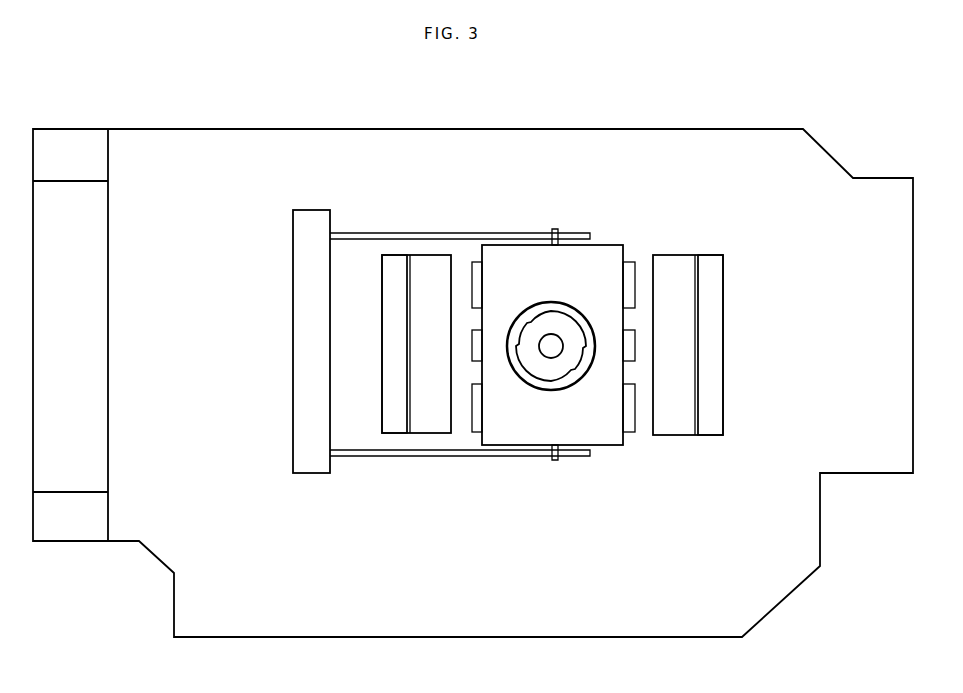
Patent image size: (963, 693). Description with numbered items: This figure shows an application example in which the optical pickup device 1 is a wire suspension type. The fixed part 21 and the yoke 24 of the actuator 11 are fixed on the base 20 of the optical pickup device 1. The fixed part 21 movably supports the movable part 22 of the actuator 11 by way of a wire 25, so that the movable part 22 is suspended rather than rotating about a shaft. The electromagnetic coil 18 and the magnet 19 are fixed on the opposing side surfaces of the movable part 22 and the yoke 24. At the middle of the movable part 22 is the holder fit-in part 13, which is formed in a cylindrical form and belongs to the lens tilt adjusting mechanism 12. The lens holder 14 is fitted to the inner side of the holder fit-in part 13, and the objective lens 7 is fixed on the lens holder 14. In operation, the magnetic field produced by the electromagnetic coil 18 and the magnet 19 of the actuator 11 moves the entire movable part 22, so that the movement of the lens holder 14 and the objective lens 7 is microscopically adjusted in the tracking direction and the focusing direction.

The optical pickup device 1 is at (764, 90).
The objective lens 7 is at (550, 334).
The actuator 11 is at (674, 212).
The lens tilt adjusting mechanism 12 is at (581, 298).
The holder fit-in part 13 is at (526, 323).
The lens holder 14 is at (549, 374).
The electromagnetic coil 18 is at (477, 270).
The magnet 19 is at (420, 435).
The base 20 is at (530, 128).
The fixed part 21 is at (293, 330).
The movable part 22 is at (603, 244).
The yoke 24 is at (395, 435).
The wire 25 is at (413, 233).